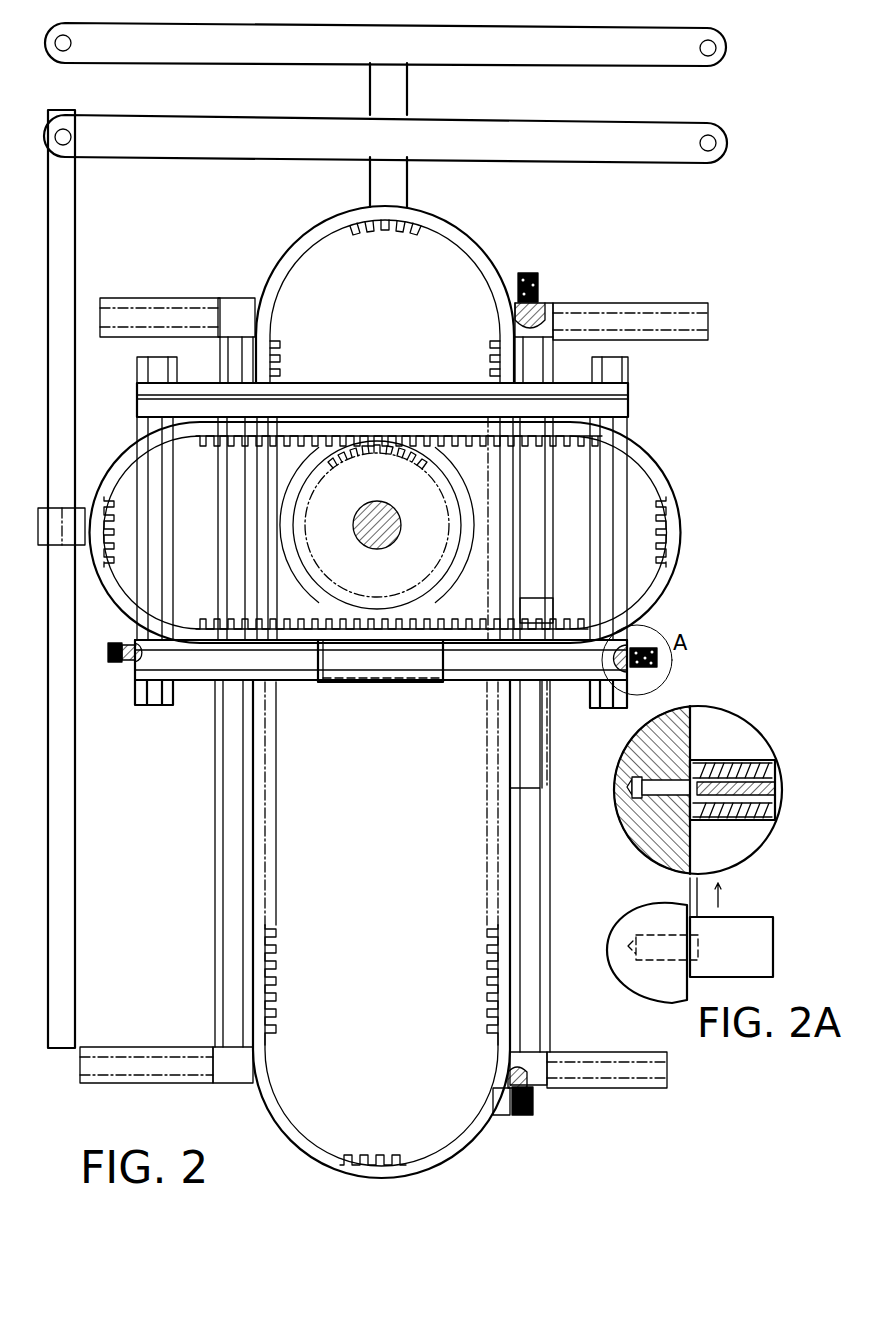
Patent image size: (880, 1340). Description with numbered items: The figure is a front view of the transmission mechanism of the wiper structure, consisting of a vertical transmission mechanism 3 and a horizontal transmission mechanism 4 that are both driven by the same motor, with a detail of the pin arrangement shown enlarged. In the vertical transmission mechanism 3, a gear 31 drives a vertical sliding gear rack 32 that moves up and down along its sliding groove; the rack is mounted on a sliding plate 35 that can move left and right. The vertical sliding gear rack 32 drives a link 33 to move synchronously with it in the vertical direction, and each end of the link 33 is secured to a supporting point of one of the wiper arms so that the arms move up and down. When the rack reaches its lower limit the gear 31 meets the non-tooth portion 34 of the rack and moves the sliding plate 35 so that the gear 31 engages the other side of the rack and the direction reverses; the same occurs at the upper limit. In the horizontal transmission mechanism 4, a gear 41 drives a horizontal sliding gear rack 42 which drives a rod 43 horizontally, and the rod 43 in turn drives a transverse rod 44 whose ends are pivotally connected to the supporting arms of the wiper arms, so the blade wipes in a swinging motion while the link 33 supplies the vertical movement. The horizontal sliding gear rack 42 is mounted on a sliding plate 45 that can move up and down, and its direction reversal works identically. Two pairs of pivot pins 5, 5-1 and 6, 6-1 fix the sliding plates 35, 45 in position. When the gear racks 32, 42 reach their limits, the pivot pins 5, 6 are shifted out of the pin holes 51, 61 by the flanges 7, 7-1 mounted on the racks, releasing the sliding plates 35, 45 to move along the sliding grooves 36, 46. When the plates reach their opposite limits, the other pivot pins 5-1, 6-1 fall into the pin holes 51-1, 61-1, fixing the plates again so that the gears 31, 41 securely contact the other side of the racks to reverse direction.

In FIG. 2, the link 33 is at (341, 34).
In FIG. 2, the transverse rod 44 is at (254, 159).
In FIG. 2, the rod 43 is at (72, 822).
In FIG. 2, the non-tooth portion 34 is at (460, 250).
In FIG. 2, the pivot pin 6 is at (519, 276).
In FIG. 2, the pivot pin 6-1 is at (541, 311).
In FIG. 2, the sliding groove 46 is at (628, 372).
In FIG. 2, the sliding plate 45 is at (628, 408).
In FIG. 2, the horizontal transmission mechanism 4 is at (651, 473).
In FIG. 2, the gear 41 is at (428, 459).
In FIG. 2, the horizontal sliding gear rack 42 is at (530, 450).
In FIG. 2, the gear 31 is at (454, 589).
In FIG. 2, the flange 7 is at (403, 668).
In FIG. 2, the pivot pin 5-1 is at (138, 645).
In FIG. 2, the pin hole 51-1 is at (133, 663).
In FIG. 2, the pivot pin 5 is at (632, 651).
In FIG. 2A, the pivot pin 5 is at (682, 777).
In FIG. 2, the pin hole 51 is at (624, 664).
In FIG. 2A, the pin hole 51 is at (668, 794).
In FIG. 2, the flange 7-1 is at (538, 763).
In FIG. 2, the sliding plate 35 is at (538, 855).
In FIG. 2, the vertical transmission mechanism 3 is at (275, 1120).
In FIG. 2, the vertical sliding gear rack 32 is at (487, 940).
In FIG. 2, the sliding groove 36 is at (184, 1062).
In FIG. 2, the pin hole 61 is at (533, 1102).
In FIG. 2, the pin hole 61-1 is at (504, 1092).